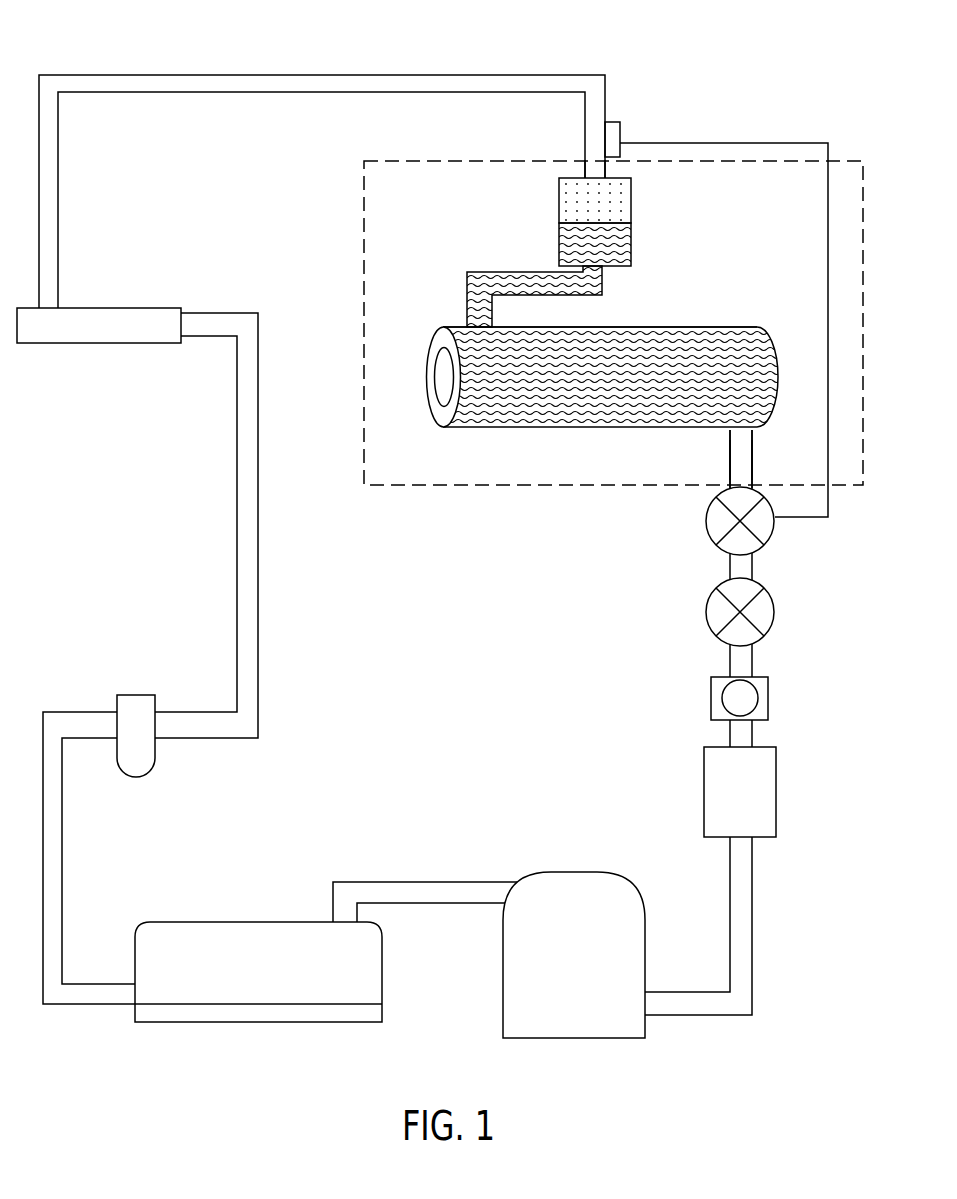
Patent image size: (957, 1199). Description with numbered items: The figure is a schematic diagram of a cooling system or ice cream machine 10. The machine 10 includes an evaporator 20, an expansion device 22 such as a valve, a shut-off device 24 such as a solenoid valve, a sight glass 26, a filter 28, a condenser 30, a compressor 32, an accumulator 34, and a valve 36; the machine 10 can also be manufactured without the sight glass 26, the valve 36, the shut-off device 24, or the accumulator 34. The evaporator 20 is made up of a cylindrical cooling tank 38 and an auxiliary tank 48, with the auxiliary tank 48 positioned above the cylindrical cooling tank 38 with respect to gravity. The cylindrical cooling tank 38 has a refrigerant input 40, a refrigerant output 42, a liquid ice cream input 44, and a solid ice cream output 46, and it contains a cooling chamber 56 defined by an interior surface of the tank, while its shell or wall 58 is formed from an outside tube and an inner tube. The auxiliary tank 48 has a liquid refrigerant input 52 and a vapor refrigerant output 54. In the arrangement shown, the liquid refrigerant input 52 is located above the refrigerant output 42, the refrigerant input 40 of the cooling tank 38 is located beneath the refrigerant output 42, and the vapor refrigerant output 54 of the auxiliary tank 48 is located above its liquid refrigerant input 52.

The ice cream machine 10 is at (527, 60).
The evaporator 20 is at (364, 222).
The expansion device 22 is at (770, 540).
The shut-off device 24 is at (772, 600).
The sight glass 26 is at (768, 685).
The filter 28 is at (776, 805).
The condenser 30 is at (645, 1032).
The compressor 32 is at (370, 1022).
The accumulator 34 is at (155, 762).
The valve 36 is at (181, 310).
The cylindrical cooling tank 38 is at (757, 430).
The refrigerant input 40 is at (729, 440).
The refrigerant output 42 is at (492, 323).
The liquid ice cream input 44 is at (441, 396).
The solid ice cream output 46 is at (778, 400).
The auxiliary tank 48 is at (631, 230).
The liquid refrigerant input 52 is at (602, 288).
The vapor refrigerant output 54 is at (605, 176).
The cooling chamber 56 is at (443, 377).
The wall 58 is at (445, 353).